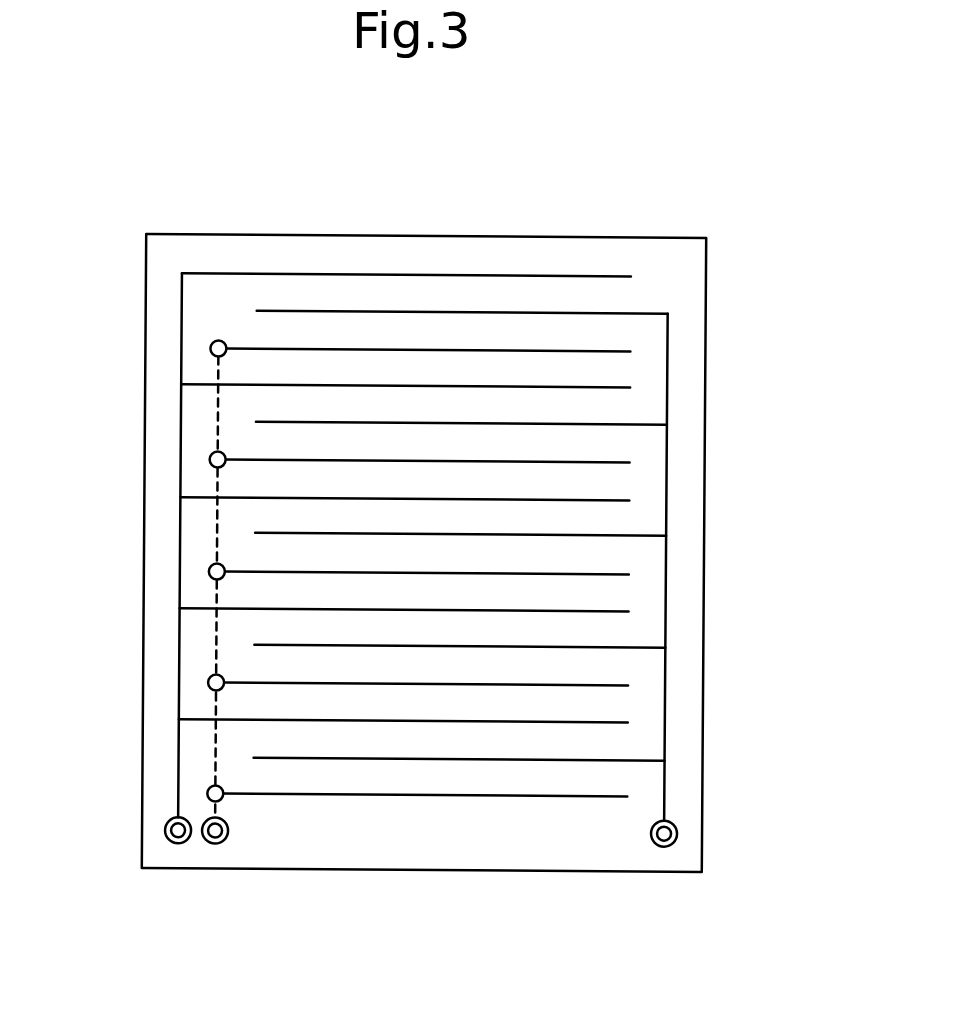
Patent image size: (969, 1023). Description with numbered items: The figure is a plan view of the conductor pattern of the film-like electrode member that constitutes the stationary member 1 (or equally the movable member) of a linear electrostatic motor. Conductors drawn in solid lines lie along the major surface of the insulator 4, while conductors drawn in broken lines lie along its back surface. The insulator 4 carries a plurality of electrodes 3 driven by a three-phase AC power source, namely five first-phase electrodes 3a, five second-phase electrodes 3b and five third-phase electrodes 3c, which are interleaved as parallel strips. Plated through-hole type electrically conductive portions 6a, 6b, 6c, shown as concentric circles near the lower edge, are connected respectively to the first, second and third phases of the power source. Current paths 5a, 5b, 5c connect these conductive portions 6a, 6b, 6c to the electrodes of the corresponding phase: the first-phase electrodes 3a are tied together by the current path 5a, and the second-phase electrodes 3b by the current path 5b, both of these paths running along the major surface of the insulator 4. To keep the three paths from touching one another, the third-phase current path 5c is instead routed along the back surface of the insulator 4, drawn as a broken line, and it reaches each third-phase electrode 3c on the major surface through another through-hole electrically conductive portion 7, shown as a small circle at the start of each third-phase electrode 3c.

The stationary member 1 is at (728, 224).
The electrodes 3 is at (504, 162).
The first-phase electrodes 3a is at (248, 275).
The second-phase electrodes 3b is at (355, 312).
The third-phase electrodes 3c is at (462, 348).
The insulator 4 is at (704, 387).
The first-phase current path 5a is at (180, 474).
The second-phase current path 5b is at (666, 496).
The third-phase current path 5c is at (216, 652).
The electrically conductive portion 6a is at (178, 845).
The electrically conductive portion 6b is at (662, 846).
The electrically conductive portion 6c is at (217, 845).
The through-hole electrically conductive portion 7 is at (209, 348).